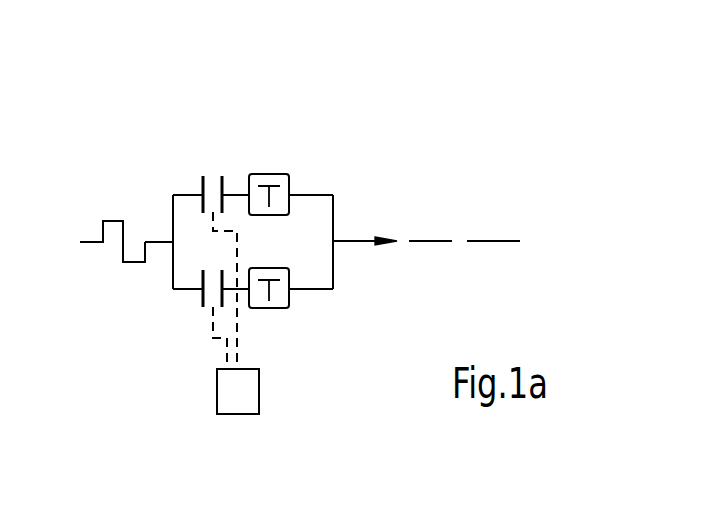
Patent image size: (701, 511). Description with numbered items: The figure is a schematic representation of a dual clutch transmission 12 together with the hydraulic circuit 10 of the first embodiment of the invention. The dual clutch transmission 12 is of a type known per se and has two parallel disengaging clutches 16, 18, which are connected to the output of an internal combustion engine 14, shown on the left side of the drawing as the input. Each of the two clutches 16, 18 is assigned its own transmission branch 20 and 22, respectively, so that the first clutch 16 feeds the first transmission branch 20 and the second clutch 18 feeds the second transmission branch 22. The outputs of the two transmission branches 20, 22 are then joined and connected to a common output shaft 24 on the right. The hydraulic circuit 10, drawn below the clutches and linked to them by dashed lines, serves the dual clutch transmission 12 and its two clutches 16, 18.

The hydraulic circuit 10 is at (262, 397).
The dual clutch transmission 12 is at (373, 187).
The internal combustion engine 14 is at (117, 220).
The disengaging clutch 16 is at (199, 177).
The disengaging clutch 18 is at (202, 302).
The transmission branch 20 is at (273, 175).
The transmission branch 22 is at (275, 310).
The common output shaft 24 is at (350, 241).